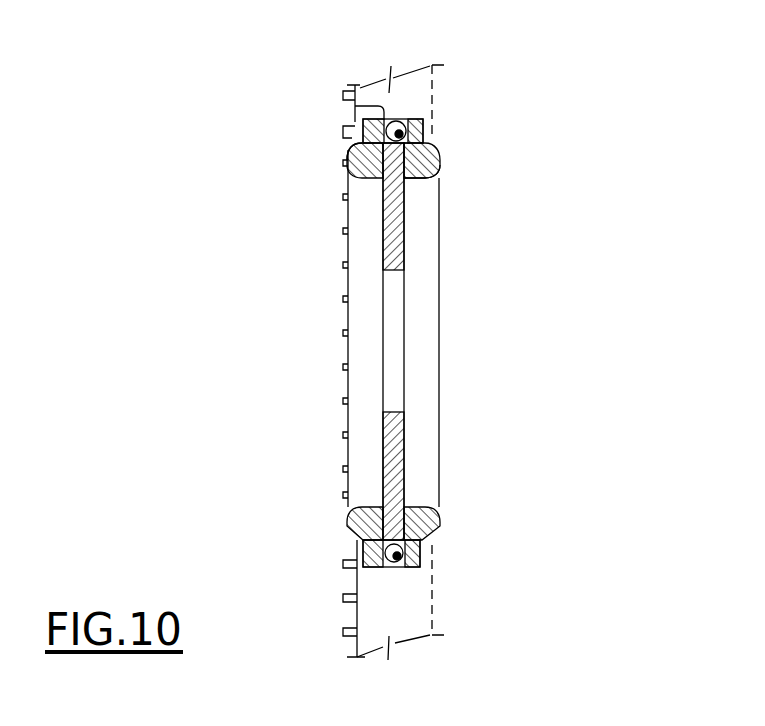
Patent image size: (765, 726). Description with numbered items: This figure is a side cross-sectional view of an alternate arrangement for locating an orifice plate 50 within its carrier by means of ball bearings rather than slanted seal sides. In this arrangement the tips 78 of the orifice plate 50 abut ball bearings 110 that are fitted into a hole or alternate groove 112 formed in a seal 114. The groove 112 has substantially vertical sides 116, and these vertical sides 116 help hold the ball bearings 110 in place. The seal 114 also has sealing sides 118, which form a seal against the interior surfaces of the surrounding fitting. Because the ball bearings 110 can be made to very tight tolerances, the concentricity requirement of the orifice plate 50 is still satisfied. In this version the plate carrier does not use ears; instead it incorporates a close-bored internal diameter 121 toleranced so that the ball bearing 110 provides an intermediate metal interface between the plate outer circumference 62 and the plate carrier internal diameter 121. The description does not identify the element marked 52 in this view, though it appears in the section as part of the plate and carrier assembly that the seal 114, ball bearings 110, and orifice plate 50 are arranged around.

The orifice plate 50 is at (398, 463).
The shaft 52 is at (398, 345).
The plate outer circumference 62 is at (437, 532).
The tips 78 is at (415, 131).
The ball bearings 110 is at (408, 119).
The groove 112 is at (355, 106).
The seal 114 is at (408, 178).
The vertical sides 116 is at (358, 146).
The sealing sides 118 is at (441, 160).
The plate carrier internal diameter 121 is at (400, 119).